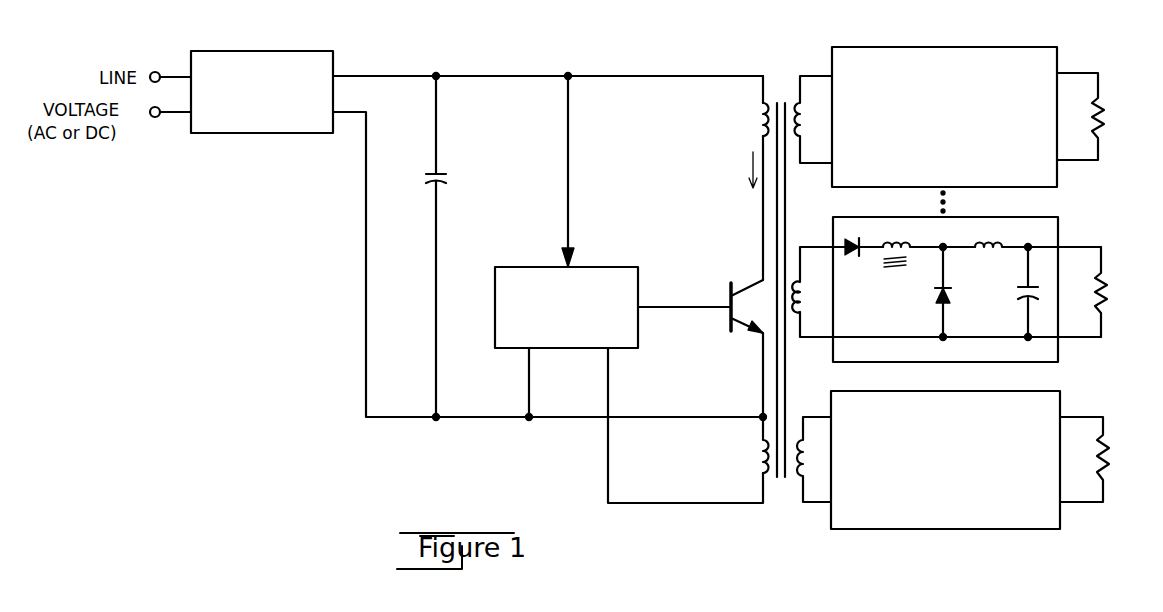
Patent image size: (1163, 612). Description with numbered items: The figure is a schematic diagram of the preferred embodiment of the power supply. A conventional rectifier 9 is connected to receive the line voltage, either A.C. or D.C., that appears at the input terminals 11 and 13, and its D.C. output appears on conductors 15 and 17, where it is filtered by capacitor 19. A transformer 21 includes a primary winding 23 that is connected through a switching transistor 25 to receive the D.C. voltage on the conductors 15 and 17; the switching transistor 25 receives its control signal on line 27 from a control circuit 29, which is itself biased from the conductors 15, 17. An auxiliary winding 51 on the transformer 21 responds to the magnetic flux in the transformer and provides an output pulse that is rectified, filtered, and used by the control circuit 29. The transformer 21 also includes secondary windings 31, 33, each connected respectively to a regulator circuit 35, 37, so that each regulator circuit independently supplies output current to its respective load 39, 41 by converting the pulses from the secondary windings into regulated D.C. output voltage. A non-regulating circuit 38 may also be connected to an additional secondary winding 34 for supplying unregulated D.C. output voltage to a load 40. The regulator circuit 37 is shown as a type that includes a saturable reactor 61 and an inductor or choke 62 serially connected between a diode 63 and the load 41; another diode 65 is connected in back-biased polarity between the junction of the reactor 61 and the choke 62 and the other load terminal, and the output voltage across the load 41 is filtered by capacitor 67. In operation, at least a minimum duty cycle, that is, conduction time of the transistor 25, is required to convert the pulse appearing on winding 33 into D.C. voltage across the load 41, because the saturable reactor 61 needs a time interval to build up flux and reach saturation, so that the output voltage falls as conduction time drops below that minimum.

The rectifier 9 is at (318, 51).
The input terminal 11 is at (160, 72).
The input terminal 13 is at (150, 116).
The conductor 15 is at (383, 75).
The conductor 17 is at (413, 416).
The capacitor 19 is at (440, 176).
The transformer 21 is at (773, 96).
The primary winding 23 is at (758, 126).
The switching transistor 25 is at (744, 330).
The line 27 is at (657, 306).
The control circuit 29 is at (608, 266).
The secondary winding 31 is at (804, 136).
The secondary winding 33 is at (804, 312).
The additional secondary winding 34 is at (806, 443).
The regulator circuit 35 is at (992, 47).
The regulator circuit 37 is at (1058, 220).
The non-regulating circuit 38 is at (1060, 393).
The load 39 is at (1102, 141).
The load 40 is at (1105, 437).
The load 41 is at (1104, 316).
The auxiliary winding 51 is at (757, 455).
The saturable reactor 61 is at (887, 256).
The inductor or choke 62 is at (1004, 254).
The diode 63 is at (845, 240).
The diode 65 is at (940, 294).
The capacitor 67 is at (1022, 296).